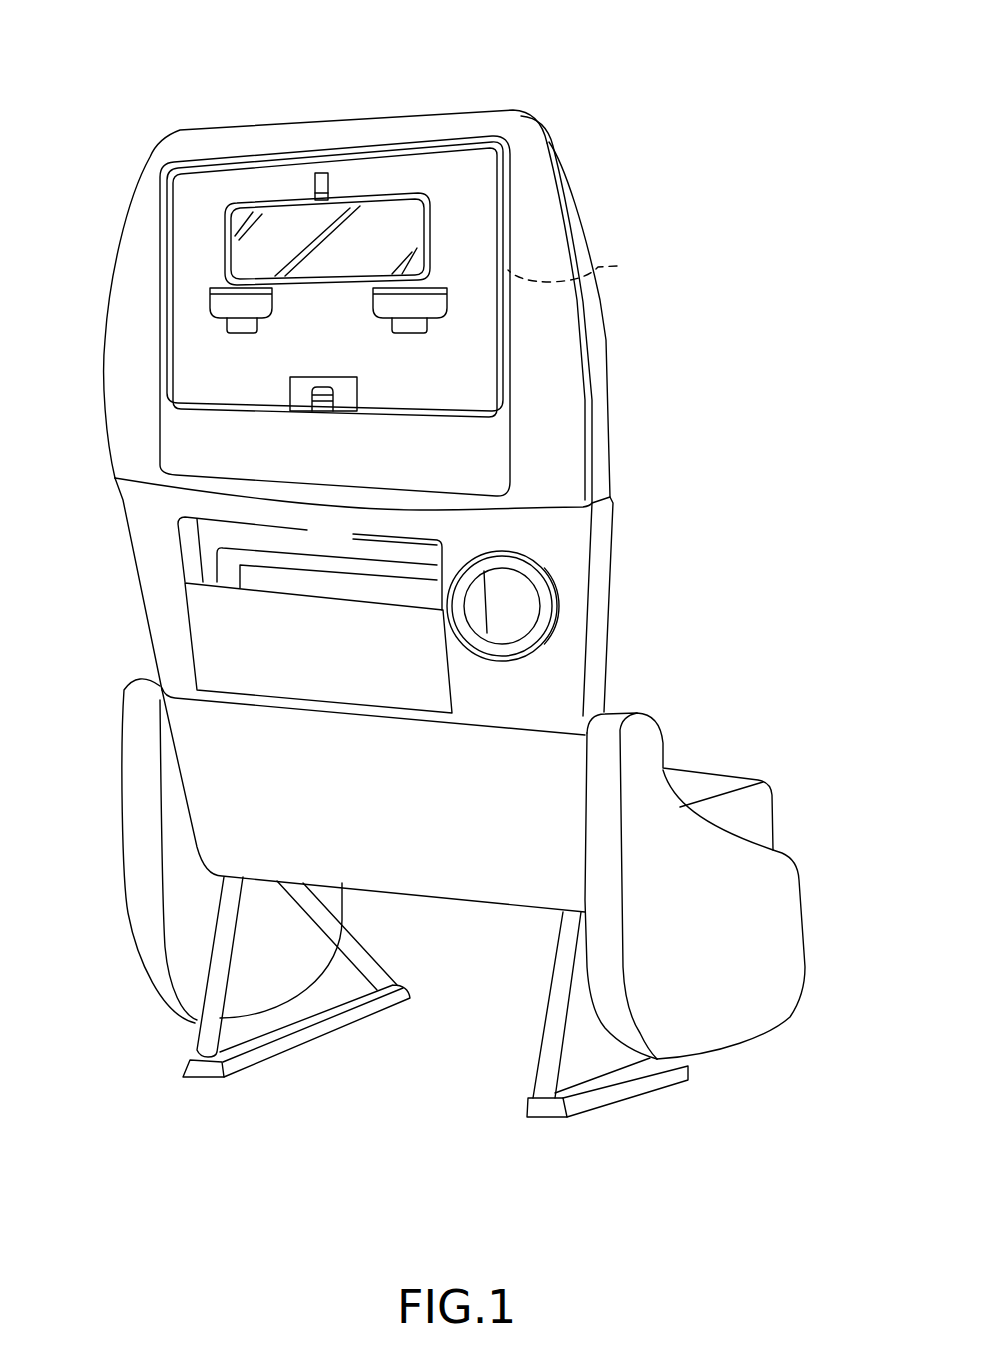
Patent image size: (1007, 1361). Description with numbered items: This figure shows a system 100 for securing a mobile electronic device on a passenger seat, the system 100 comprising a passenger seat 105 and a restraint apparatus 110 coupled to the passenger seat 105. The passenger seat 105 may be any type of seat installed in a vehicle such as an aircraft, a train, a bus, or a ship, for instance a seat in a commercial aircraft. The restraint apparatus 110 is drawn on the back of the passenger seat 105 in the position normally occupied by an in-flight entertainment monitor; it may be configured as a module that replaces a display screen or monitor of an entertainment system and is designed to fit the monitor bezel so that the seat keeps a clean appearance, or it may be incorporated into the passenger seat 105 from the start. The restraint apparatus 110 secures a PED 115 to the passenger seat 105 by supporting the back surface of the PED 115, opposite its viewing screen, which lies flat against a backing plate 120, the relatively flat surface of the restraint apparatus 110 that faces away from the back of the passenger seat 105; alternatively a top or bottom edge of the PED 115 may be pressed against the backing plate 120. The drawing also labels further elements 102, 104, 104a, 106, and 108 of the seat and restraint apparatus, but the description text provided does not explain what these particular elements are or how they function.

The system 100 is at (137, 40).
The seat back 102 is at (567, 418).
The device holder 104 is at (500, 264).
The holder slot 104a is at (591, 268).
The passenger seat 105 is at (207, 630).
The frame 106 is at (158, 218).
The latch 108 is at (345, 423).
The restraint apparatus 110 is at (207, 178).
The PED 115 is at (388, 210).
The backing plate 120 is at (473, 353).